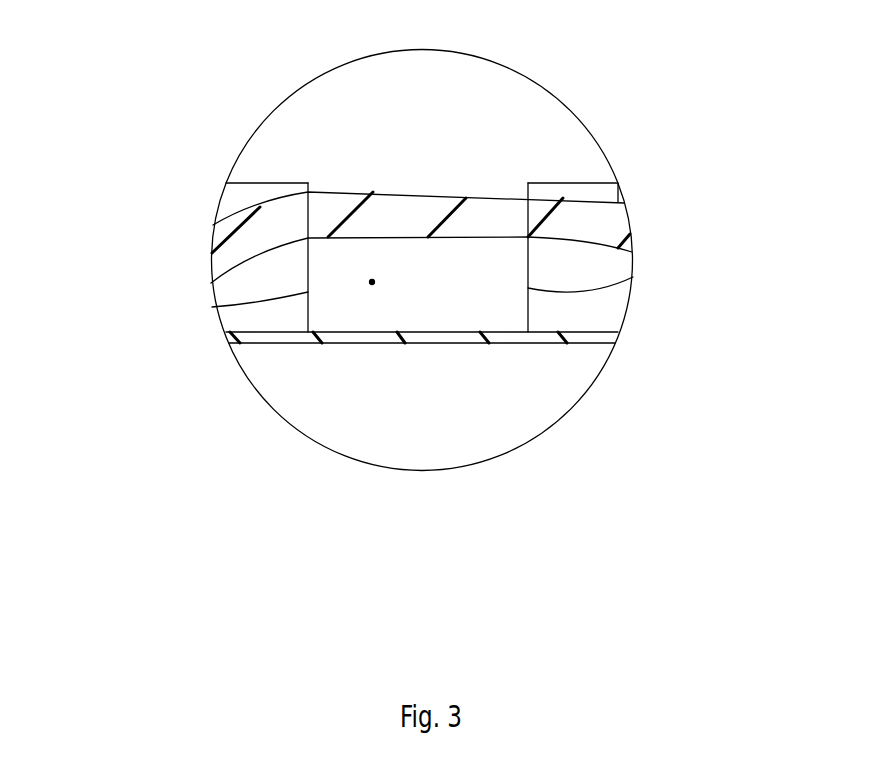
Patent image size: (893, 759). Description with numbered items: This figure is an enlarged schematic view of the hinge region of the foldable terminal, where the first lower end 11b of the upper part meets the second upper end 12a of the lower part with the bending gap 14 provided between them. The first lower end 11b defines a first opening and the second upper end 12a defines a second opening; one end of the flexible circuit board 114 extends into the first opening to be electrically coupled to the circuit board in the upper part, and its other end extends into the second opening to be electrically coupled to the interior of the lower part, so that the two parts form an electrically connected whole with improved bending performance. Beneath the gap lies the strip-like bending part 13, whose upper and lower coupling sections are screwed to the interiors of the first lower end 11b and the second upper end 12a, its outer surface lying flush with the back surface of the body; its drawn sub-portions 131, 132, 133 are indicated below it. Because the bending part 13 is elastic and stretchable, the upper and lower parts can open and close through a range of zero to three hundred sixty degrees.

The bending gap 14 is at (372, 282).
The flexible circuit board 114 is at (587, 223).
The first lower end 11b is at (212, 307).
The second upper end 12a is at (633, 278).
The bending part 13 is at (422, 493).
The first sub-layer of strip 131 is at (262, 338).
The second sub-layer of strip 132 is at (352, 344).
The third sub-layer of strip 133 is at (583, 338).